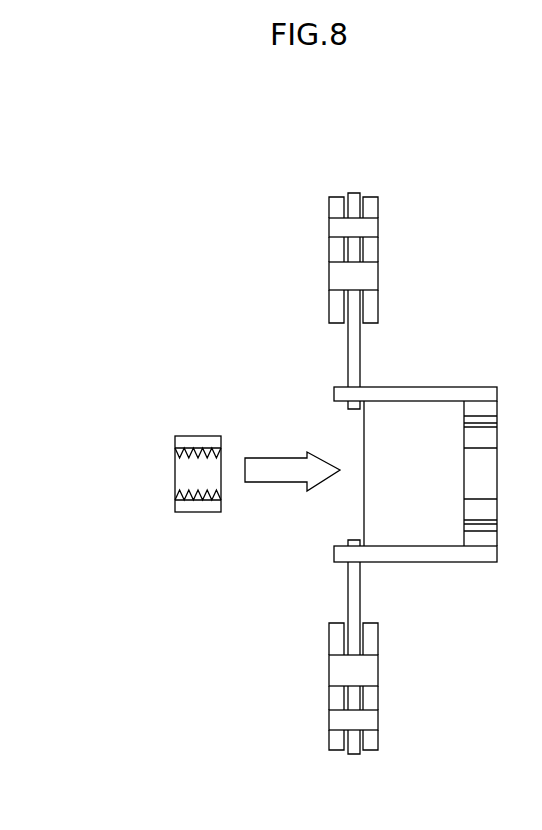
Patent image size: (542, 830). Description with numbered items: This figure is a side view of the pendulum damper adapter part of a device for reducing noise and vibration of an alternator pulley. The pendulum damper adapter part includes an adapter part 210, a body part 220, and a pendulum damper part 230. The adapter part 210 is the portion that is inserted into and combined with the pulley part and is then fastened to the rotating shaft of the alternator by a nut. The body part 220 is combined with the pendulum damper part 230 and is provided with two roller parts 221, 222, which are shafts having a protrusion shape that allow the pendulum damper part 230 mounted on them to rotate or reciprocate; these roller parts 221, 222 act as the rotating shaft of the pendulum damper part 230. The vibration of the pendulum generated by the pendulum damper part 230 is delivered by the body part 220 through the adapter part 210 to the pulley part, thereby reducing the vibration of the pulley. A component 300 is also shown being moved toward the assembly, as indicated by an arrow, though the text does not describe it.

The adapter part 210 is at (445, 387).
The body part 220 is at (352, 363).
The roller part 221 is at (335, 275).
The roller part 222 is at (353, 692).
The pendulum damper part 230 is at (332, 208).
The connector 300 is at (175, 475).